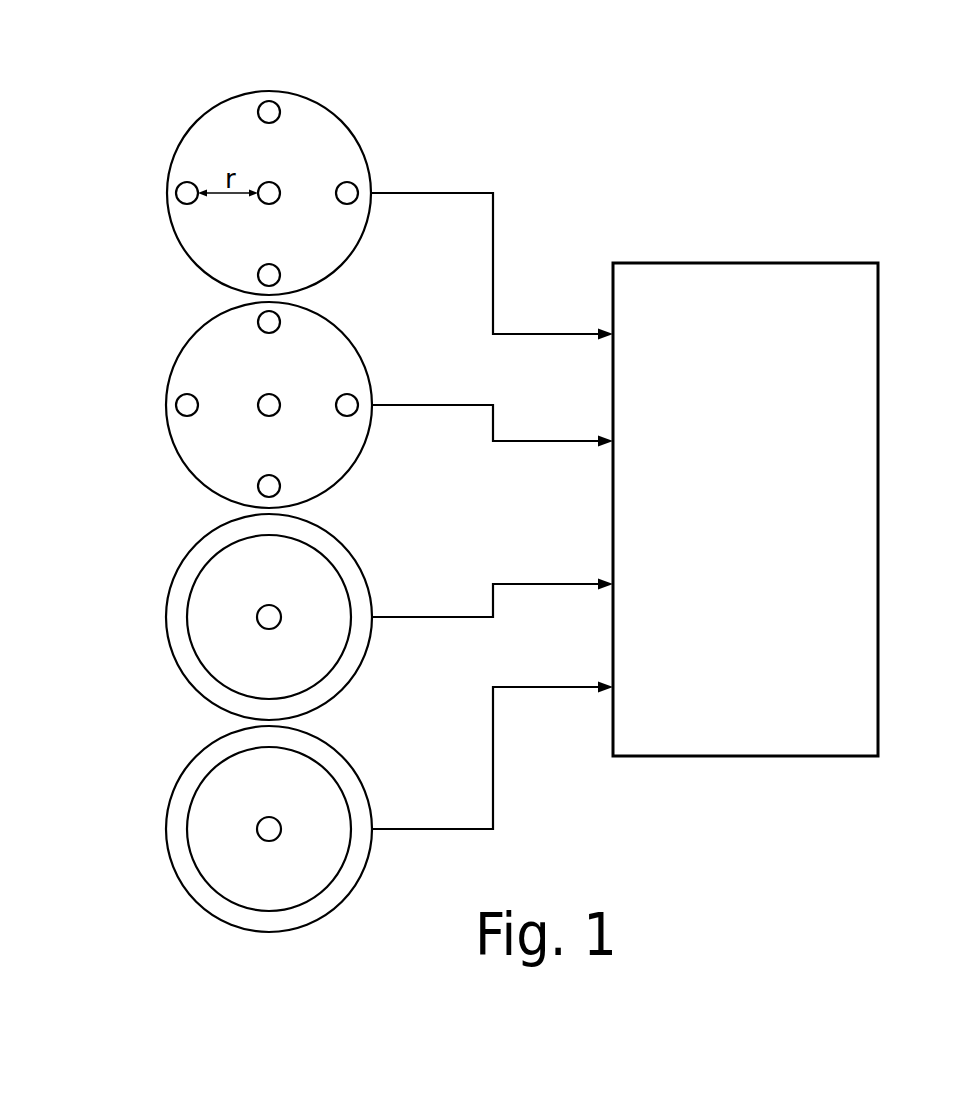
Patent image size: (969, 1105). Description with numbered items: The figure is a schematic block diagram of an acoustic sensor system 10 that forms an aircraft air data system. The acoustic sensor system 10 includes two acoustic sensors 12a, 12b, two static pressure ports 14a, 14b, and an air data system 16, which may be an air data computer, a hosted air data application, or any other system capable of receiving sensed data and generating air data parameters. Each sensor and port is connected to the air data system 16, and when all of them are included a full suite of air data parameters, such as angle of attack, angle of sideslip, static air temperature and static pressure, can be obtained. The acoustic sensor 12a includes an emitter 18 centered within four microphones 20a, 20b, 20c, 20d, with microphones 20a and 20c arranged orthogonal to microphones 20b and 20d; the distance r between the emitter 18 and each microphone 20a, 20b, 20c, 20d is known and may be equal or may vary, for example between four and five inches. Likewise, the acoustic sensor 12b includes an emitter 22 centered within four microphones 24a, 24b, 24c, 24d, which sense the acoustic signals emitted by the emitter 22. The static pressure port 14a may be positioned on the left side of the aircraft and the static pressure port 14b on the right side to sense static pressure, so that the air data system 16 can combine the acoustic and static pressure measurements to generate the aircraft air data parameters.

The acoustic sensor system 10 is at (724, 175).
The acoustic sensor 12a is at (190, 128).
The acoustic sensor 12b is at (173, 363).
The static pressure port 14a is at (168, 617).
The static pressure port 14b is at (168, 829).
The air data system 16 is at (850, 315).
The emitter 18 is at (279, 186).
The microphone 20a is at (267, 101).
The microphone 20b is at (348, 181).
The microphone 20c is at (259, 272).
The microphone 20d is at (177, 190).
The emitter 22 is at (279, 398).
The microphone 24a is at (275, 313).
The microphone 24b is at (348, 393).
The microphone 24c is at (259, 484).
The microphone 24d is at (177, 402).